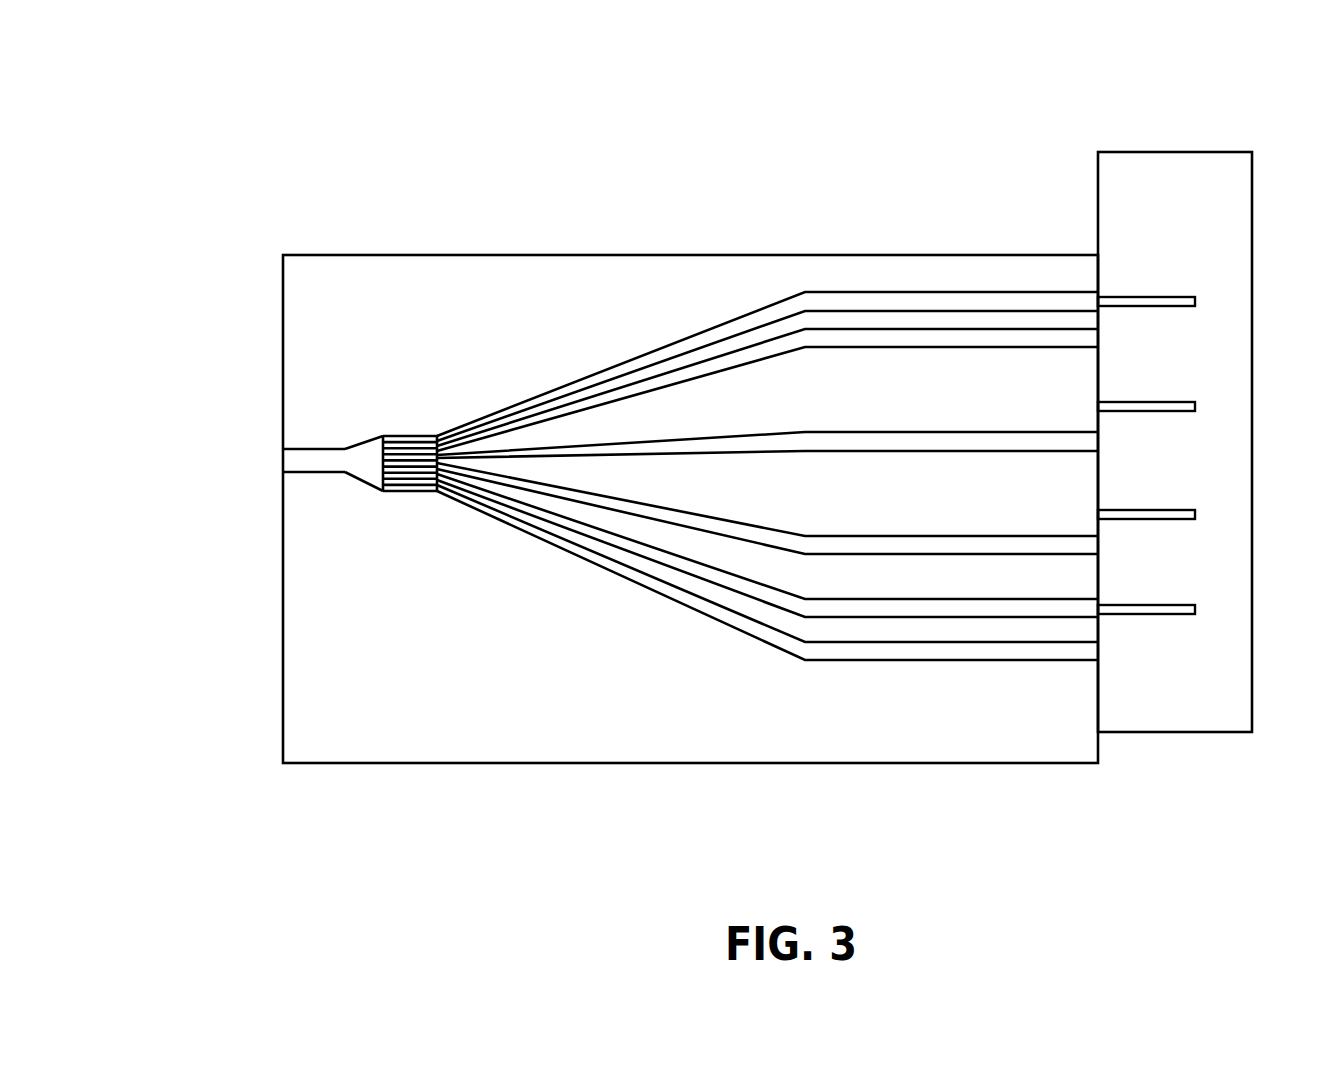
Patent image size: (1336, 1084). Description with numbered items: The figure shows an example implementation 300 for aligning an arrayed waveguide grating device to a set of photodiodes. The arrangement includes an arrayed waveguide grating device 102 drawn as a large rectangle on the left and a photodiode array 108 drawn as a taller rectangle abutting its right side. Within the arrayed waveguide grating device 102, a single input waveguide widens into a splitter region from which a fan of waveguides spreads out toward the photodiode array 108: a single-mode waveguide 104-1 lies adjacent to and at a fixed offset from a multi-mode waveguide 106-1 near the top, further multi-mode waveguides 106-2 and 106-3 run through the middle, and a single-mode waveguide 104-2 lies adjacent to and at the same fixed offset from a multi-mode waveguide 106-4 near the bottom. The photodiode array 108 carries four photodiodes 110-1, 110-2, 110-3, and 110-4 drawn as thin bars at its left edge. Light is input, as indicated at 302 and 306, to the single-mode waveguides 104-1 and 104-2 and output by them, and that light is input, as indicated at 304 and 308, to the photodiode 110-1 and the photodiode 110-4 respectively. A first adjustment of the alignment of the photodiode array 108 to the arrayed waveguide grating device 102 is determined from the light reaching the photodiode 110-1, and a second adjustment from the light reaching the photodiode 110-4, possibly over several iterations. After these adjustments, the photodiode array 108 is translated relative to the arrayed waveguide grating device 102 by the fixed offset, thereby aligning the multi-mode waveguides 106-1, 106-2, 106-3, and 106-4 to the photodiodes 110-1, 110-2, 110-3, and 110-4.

The example implementation 300 is at (270, 63).
The arrayed waveguide grating device 102 is at (357, 294).
The photodiode array 108 is at (1243, 188).
The light input 302 is at (250, 460).
The light input 306 is at (312, 463).
The single-mode waveguide 104-1 is at (892, 286).
The single-mode waveguide 104-2 is at (982, 594).
The multi-mode waveguide 106-1 is at (892, 376).
The multi-mode waveguide 106-2 is at (892, 476).
The multi-mode waveguide 106-3 is at (892, 528).
The multi-mode waveguide 106-4 is at (892, 686).
The photodiode 110-1 is at (1177, 290).
The photodiode 110-2 is at (1177, 396).
The photodiode 110-3 is at (1177, 504).
The photodiode 110-4 is at (1177, 600).
The light output 304 is at (1078, 300).
The light output 308 is at (1078, 609).